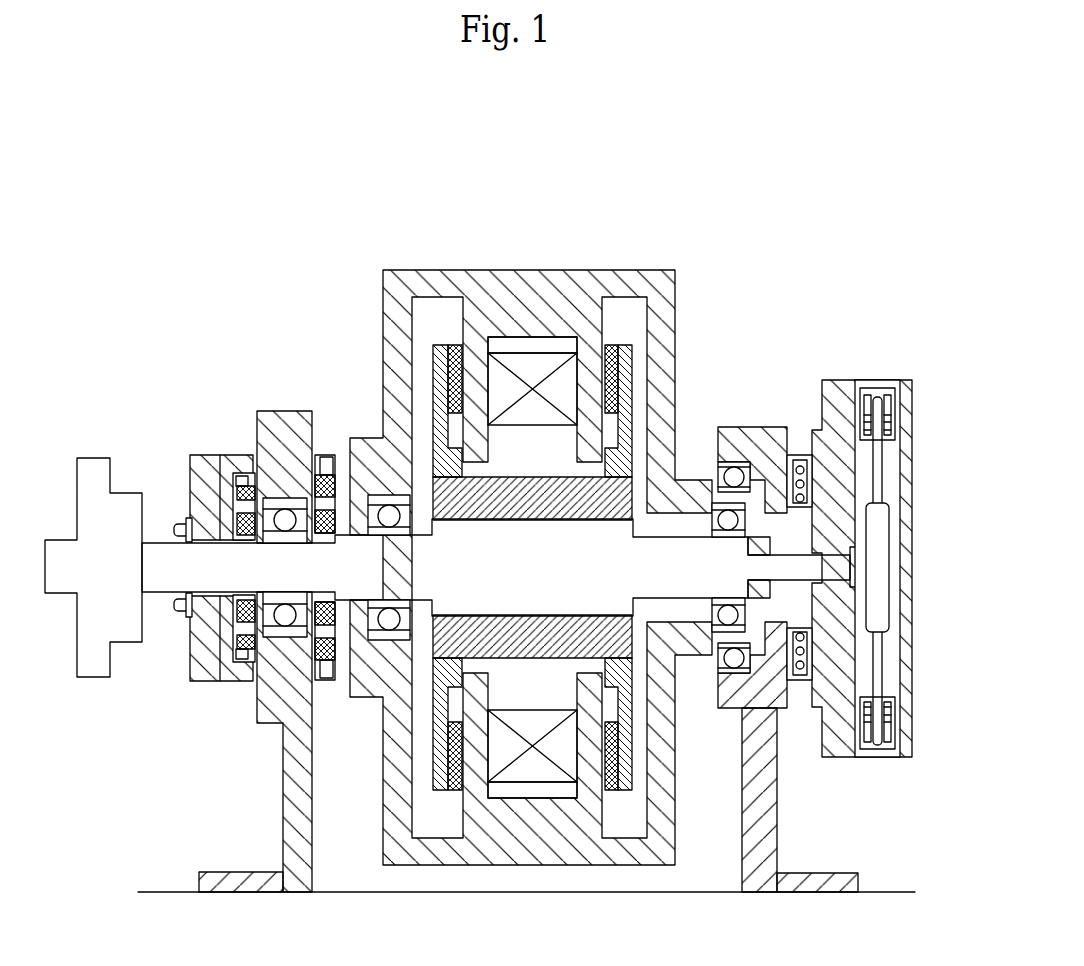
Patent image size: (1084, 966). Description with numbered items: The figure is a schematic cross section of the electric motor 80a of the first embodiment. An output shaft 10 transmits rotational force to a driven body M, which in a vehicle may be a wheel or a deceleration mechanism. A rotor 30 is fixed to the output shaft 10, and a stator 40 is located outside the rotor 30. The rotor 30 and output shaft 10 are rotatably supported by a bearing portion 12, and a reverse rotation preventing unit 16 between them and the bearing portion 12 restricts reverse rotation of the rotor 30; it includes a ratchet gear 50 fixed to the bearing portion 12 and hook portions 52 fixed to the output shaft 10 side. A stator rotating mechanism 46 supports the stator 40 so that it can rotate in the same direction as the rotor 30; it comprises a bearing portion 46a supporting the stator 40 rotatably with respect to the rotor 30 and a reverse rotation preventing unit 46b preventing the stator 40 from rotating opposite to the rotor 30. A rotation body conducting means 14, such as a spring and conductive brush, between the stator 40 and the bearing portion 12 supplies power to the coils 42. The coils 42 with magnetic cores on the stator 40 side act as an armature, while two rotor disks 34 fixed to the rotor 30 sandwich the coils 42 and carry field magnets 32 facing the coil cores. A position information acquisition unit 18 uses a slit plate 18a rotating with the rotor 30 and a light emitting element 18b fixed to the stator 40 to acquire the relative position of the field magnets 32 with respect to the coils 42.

The output shaft 10 is at (162, 595).
The bearing portion 12 is at (268, 409).
The rotation body conducting means 14 is at (796, 455).
The reverse rotation preventing unit 16 is at (210, 346).
The position information acquisition unit 18 is at (957, 272).
The slit plate 18a is at (877, 397).
The light emitting element 18b is at (862, 392).
The rotor 30 is at (542, 477).
The field magnets 32 is at (455, 345).
The rotor disks 34 is at (442, 345).
The stator 40 is at (658, 269).
The coils 42 is at (533, 353).
The stator rotating mechanism 46 is at (263, 308).
The bearing portion 46a is at (365, 440).
The reverse rotation preventing unit 46b is at (290, 505).
The ratchet gear 50 is at (186, 540).
The hook portions 52 is at (232, 515).
The electric motor 80a is at (723, 178).
The driven body M is at (95, 457).